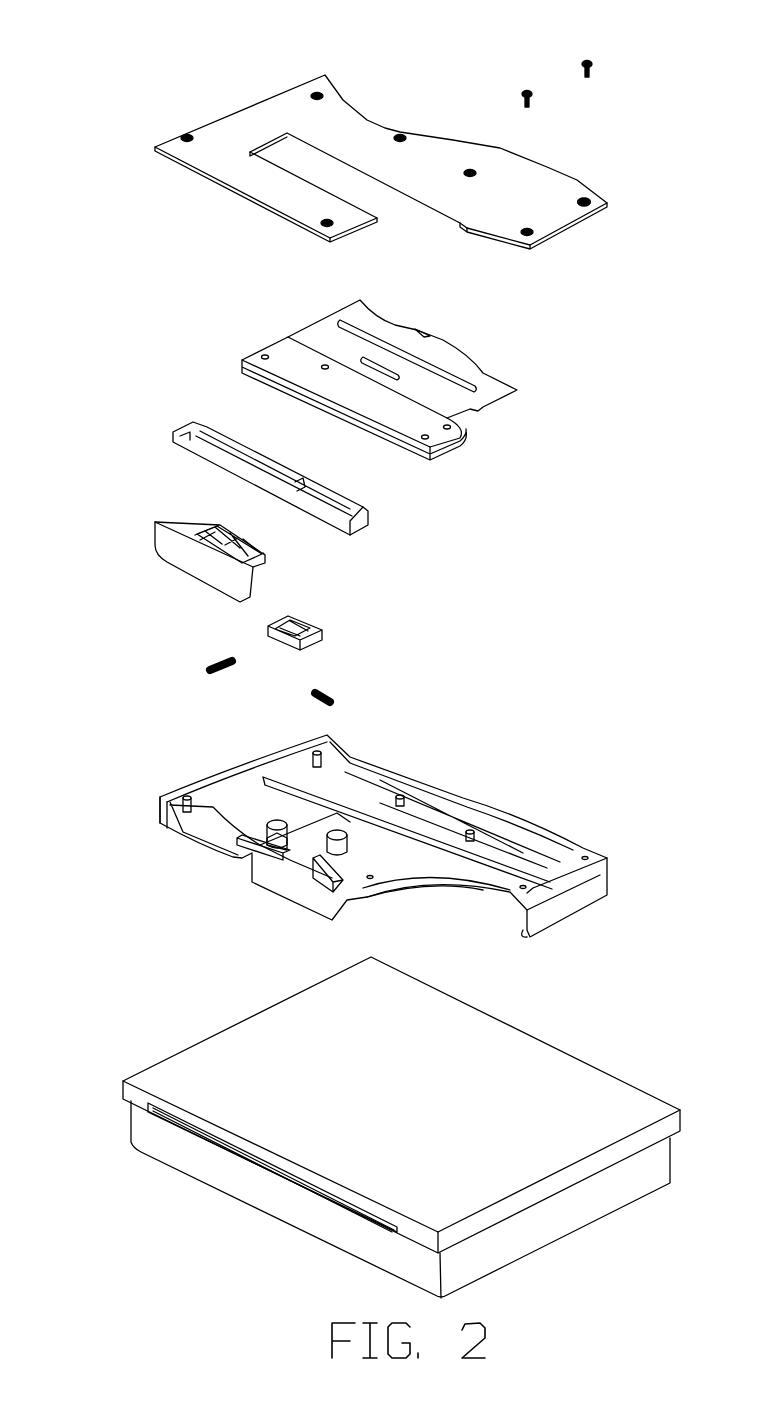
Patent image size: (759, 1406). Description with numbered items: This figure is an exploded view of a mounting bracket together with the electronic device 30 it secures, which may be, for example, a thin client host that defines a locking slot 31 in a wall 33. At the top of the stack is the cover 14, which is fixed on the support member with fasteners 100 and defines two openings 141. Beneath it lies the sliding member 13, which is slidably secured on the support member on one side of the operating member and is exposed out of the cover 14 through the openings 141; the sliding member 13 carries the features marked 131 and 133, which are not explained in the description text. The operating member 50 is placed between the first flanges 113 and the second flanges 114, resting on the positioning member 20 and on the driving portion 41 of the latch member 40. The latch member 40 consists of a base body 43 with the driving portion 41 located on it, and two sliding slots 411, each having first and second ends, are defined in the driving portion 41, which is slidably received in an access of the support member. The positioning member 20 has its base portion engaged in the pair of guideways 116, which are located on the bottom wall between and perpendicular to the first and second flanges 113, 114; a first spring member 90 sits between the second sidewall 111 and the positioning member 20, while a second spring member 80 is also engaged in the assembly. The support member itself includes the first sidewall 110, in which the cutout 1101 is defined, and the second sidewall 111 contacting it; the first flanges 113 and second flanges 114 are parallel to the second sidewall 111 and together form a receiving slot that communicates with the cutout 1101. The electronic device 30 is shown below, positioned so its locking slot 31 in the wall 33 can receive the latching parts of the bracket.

The cover 14 is at (533, 173).
The openings 141 is at (589, 198).
The fasteners 100 is at (589, 59).
The sliding member 13 is at (485, 380).
The positioning hole 131 is at (449, 430).
The positioning hole 133 is at (425, 440).
The operating member 50 is at (167, 417).
The latch member 40 is at (186, 552).
The driving portion 41 is at (235, 530).
The sliding slots 411 is at (208, 533).
The base body 43 is at (205, 573).
The positioning member 20 is at (330, 630).
The second spring member 80 is at (325, 690).
The first spring member 90 is at (227, 675).
The first sidewall 110 is at (331, 851).
The second sidewall 111 is at (158, 816).
The first flanges 113 is at (328, 875).
The second flanges 114 is at (270, 848).
The guideways 116 is at (283, 850).
The cutout 1101 is at (372, 897).
The electronic device 30 is at (401, 1127).
The locking slot 31 is at (248, 1160).
The wall 33 is at (297, 1177).